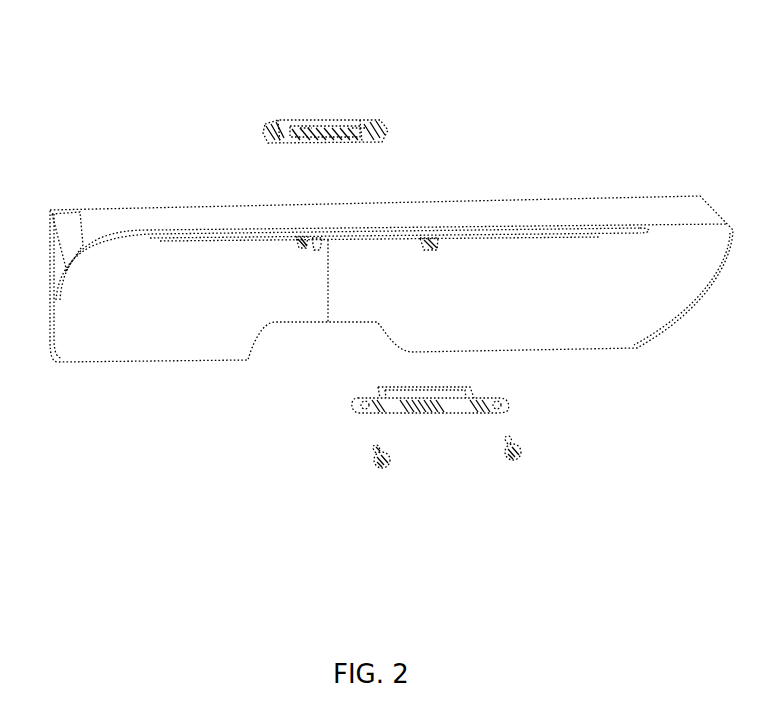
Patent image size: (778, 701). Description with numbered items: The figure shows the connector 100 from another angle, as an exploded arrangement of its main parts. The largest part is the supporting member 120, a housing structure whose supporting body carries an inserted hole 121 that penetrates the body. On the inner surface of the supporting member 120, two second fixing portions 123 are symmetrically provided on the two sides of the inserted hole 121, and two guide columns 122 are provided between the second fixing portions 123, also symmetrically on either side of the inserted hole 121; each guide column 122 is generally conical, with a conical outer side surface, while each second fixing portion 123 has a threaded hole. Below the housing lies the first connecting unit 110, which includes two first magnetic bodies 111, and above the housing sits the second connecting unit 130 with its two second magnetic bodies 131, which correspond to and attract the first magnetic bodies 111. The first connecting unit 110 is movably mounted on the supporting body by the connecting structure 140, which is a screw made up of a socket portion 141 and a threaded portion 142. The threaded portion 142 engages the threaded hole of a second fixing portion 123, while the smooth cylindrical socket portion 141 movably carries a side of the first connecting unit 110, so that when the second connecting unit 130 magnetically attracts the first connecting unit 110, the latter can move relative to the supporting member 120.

The connector 100 is at (118, 112).
The first connecting unit 110 is at (473, 402).
The first magnetic bodies 111 is at (402, 405).
The supporting member 120 is at (490, 213).
The inserted hole 121 is at (370, 230).
The guide columns 122 is at (315, 240).
The second fixing portions 123 is at (300, 237).
The second connecting unit 130 is at (373, 127).
The second magnetic bodies 131 is at (360, 128).
The connecting structure 140 is at (248, 405).
The socket portion 141 is at (385, 451).
The threaded portion 142 is at (378, 448).